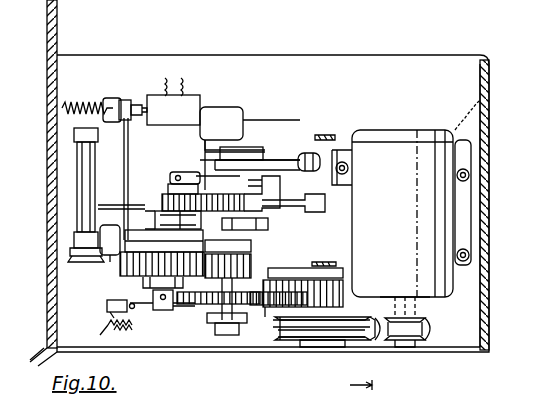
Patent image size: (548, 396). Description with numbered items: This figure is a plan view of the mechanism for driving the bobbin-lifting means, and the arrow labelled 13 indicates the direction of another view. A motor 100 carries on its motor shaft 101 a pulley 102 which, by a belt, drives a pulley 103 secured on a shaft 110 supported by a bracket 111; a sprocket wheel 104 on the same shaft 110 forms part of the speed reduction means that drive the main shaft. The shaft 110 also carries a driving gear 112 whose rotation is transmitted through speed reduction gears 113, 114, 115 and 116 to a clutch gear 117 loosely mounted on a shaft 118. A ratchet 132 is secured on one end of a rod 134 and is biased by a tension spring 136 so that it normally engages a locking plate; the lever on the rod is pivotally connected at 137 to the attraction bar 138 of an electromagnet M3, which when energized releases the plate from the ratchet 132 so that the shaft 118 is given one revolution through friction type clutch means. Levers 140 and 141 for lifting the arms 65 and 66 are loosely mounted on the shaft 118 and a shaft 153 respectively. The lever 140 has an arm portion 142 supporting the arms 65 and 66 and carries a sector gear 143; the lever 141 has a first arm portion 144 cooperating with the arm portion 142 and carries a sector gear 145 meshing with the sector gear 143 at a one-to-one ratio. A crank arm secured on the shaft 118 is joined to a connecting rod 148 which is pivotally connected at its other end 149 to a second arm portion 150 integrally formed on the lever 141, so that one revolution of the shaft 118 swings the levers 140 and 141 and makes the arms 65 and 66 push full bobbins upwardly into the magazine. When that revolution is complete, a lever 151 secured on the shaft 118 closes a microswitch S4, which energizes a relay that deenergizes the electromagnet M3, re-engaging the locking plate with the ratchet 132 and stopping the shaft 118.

The tension spring 136 is at (72, 103).
The pivotal connection 137 is at (120, 100).
The attraction bar 138 is at (144, 105).
The electromagnet M3 is at (190, 95).
The rod 134 is at (128, 165).
The lifting arm 65 is at (78, 128).
The lifting arm 66 is at (73, 258).
The ratchet 132 is at (108, 255).
The arm portion 142 is at (108, 204).
The sector gear 145 is at (240, 112).
The shaft 153 is at (245, 147).
The connecting rod 148 is at (278, 158).
The pivotal connection 149 is at (308, 152).
The sector gear 143 is at (196, 192).
The lever 140 is at (198, 222).
The lever 141 is at (266, 196).
The second arm portion 150 is at (272, 224).
The first arm portion 144 is at (312, 216).
The shaft 118 is at (150, 303).
The lever 151 is at (170, 290).
The speed reduction gear 116 is at (200, 305).
The speed reduction gear 115 is at (224, 325).
The clutch gear 117 is at (112, 298).
The microswitch S4 is at (104, 330).
The speed reduction gear 113 is at (268, 280).
The driving gear 112 is at (316, 292).
The bracket 111 is at (268, 320).
The speed reduction gear 114 is at (290, 330).
The shaft 110 is at (320, 320).
The sprocket wheel 104 is at (355, 335).
The pulley 103 is at (372, 340).
The motor shaft 101 is at (405, 342).
The pulley 102 is at (430, 335).
The motor 100 is at (432, 130).
The section line 13 is at (352, 384).